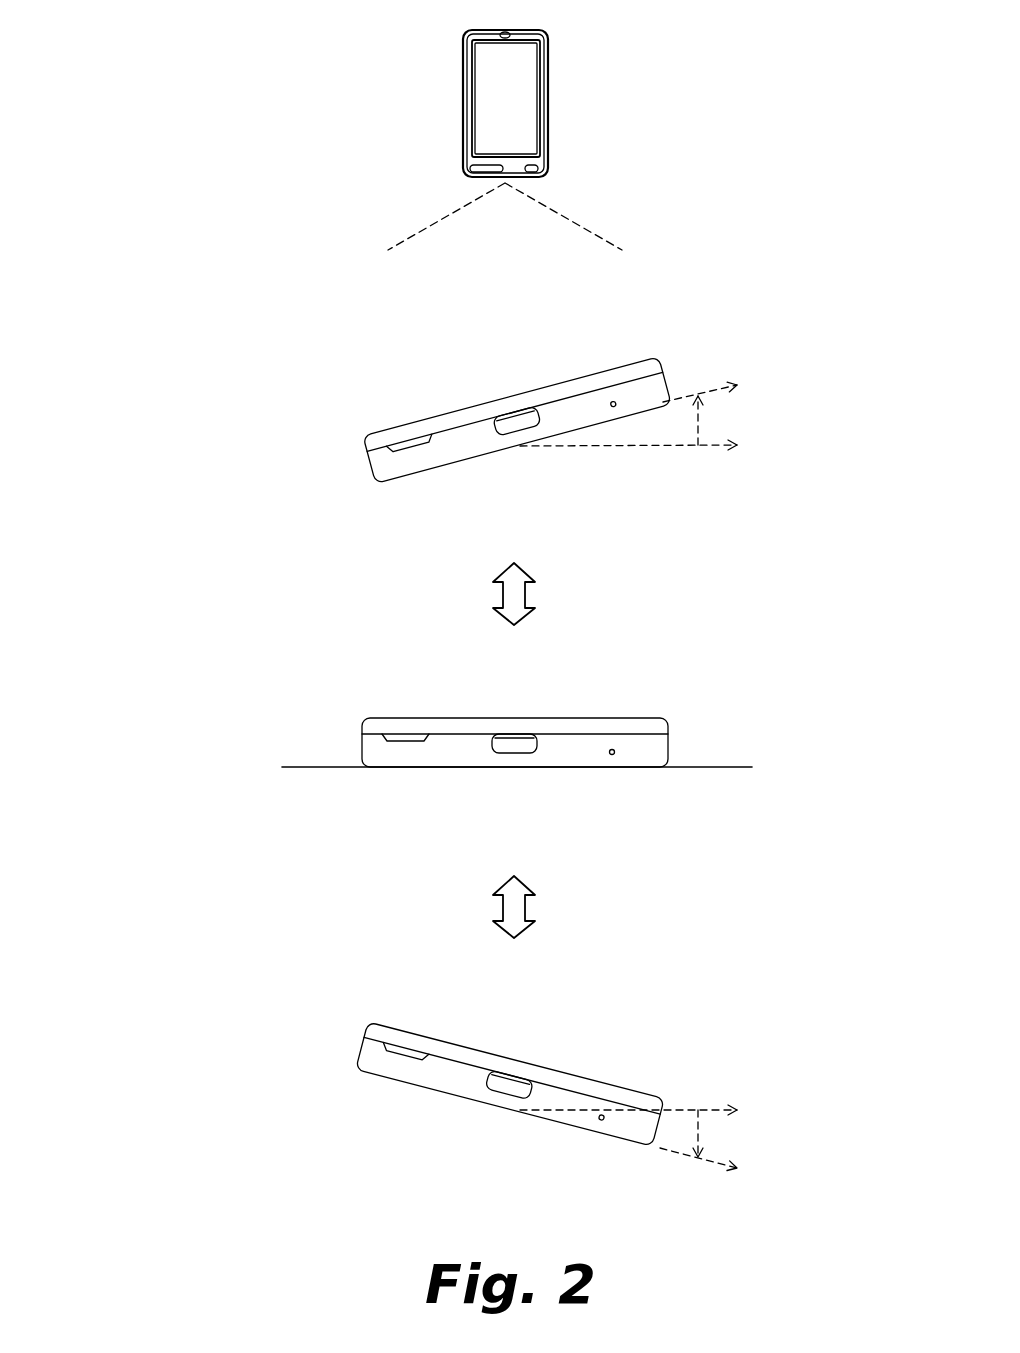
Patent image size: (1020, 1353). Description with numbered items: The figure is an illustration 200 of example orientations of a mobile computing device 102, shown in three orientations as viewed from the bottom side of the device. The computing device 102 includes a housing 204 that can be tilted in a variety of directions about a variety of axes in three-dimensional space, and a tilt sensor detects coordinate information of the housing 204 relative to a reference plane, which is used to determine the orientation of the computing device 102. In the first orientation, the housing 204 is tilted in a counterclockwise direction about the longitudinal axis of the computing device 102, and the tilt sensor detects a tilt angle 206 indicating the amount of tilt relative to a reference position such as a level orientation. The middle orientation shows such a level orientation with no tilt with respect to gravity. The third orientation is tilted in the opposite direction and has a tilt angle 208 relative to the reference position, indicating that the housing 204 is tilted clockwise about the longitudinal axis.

The illustration 200 is at (168, 68).
The computing device 102 is at (491, 109).
The housing 204 is at (473, 403).
The tilt angle 206 is at (699, 434).
The tilt angle 208 is at (698, 1124).